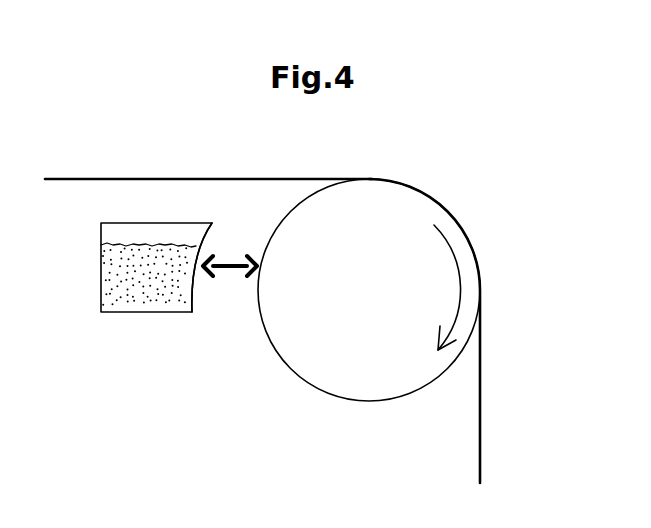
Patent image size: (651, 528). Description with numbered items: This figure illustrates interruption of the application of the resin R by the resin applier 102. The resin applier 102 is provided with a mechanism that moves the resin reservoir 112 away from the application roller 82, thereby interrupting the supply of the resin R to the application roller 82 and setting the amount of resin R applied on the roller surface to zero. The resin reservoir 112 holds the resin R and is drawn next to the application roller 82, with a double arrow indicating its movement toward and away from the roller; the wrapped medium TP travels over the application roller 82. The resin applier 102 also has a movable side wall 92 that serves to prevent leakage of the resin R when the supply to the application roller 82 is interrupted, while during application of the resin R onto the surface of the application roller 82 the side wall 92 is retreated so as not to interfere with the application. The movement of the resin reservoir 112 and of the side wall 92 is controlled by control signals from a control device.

The transfer paper (web) TP is at (192, 179).
The application roller 82 is at (381, 220).
The movable side wall 92 is at (191, 282).
The resin applier 102 is at (504, 217).
The resin reservoir 112 is at (130, 312).
The resin R is at (124, 268).